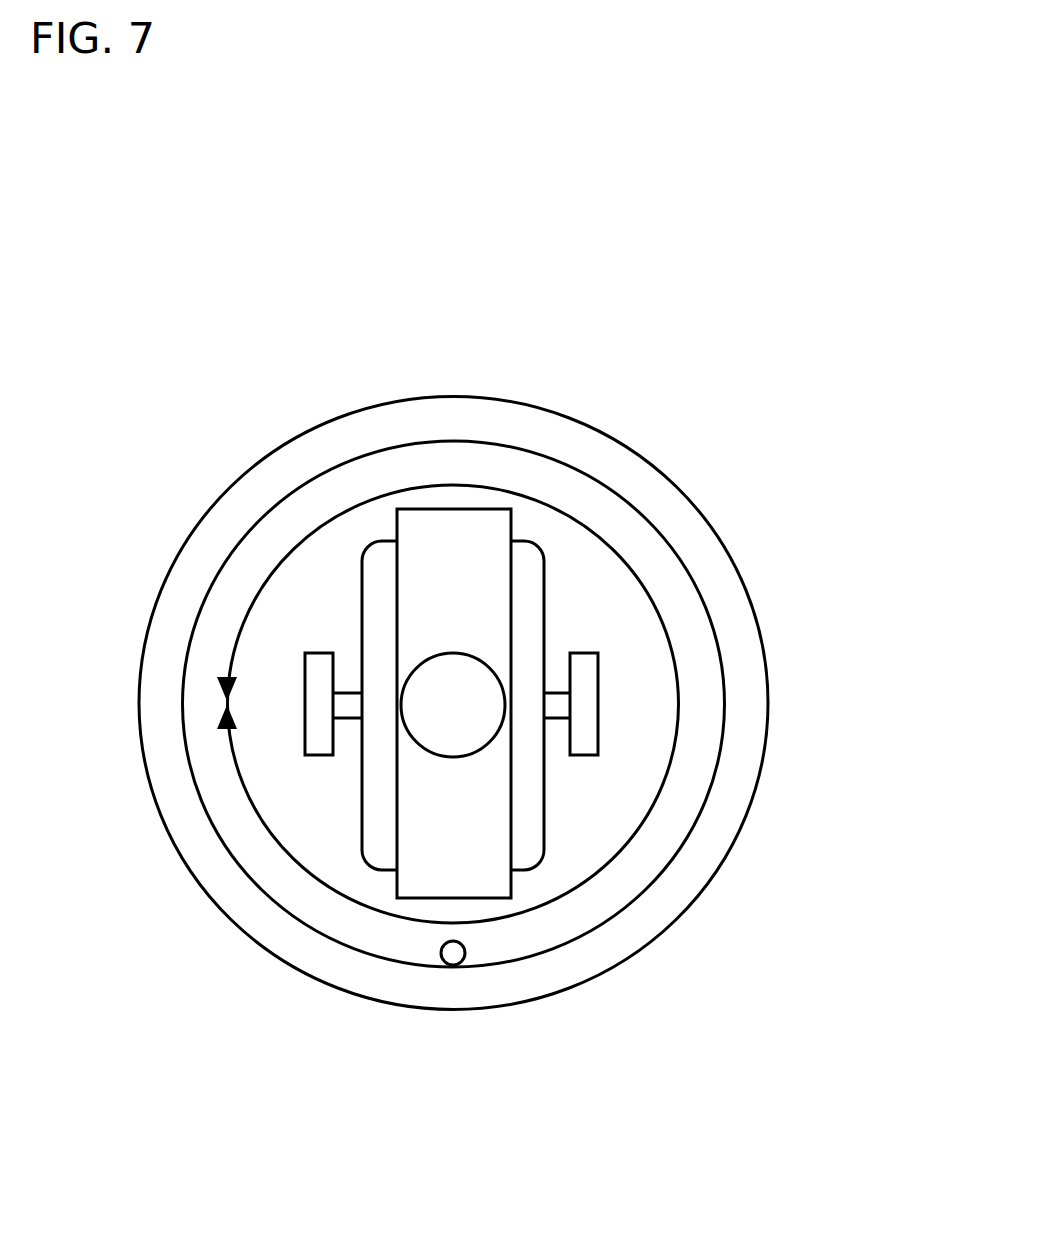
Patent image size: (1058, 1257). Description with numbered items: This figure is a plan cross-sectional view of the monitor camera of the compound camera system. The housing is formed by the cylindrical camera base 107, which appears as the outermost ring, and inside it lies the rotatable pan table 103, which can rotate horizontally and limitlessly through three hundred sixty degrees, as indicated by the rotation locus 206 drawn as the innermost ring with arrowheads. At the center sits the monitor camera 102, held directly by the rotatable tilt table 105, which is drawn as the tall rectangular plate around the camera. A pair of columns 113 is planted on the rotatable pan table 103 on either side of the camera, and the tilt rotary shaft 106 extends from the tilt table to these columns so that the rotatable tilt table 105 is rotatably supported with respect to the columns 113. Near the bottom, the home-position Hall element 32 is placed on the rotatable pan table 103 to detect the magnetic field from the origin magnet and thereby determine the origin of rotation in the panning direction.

The home-position Hall element 32 is at (453, 965).
The monitor camera 102 is at (455, 650).
The rotatable pan table 103 is at (603, 927).
The rotatable tilt table 105 is at (454, 541).
The tilt rotary shaft 106 is at (552, 684).
The camera base 107 is at (302, 973).
The columns 113 is at (304, 663).
The rotation locus 206 is at (647, 818).